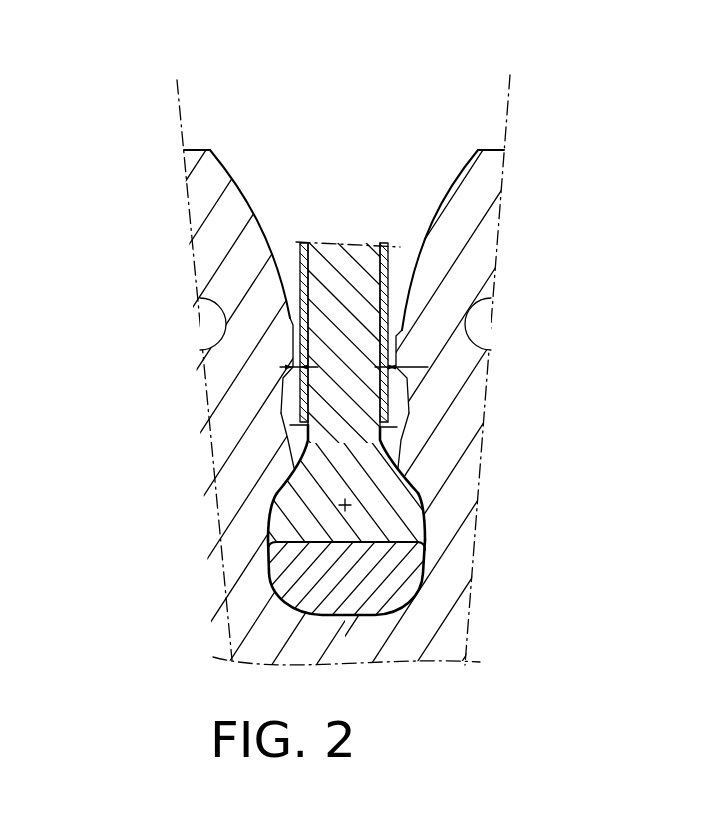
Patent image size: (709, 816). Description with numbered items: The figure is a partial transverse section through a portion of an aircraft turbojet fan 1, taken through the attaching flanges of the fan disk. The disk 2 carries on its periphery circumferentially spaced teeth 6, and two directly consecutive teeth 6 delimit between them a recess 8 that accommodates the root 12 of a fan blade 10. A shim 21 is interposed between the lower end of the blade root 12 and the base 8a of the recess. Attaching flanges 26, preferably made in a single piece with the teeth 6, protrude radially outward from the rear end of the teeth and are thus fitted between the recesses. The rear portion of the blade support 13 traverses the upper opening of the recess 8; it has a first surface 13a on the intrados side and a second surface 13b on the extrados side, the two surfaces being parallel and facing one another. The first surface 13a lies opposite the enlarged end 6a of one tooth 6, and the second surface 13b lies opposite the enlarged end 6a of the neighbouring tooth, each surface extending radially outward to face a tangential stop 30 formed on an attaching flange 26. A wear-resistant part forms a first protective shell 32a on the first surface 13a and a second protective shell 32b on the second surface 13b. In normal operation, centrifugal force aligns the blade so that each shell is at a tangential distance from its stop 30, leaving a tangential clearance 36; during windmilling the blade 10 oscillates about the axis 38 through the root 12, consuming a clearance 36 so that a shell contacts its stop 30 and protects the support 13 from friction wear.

The aircraft turbojet fan 1 is at (603, 140).
The disk 2 is at (423, 649).
The teeth 6 is at (237, 523).
The enlarged end 6a is at (288, 458).
The recess 8 is at (424, 527).
The base of the recess 8a is at (322, 612).
The fan blade 10 is at (342, 230).
The root 12 is at (277, 525).
The support 13 is at (356, 357).
The first surface 13a is at (292, 424).
The second surface 13b is at (400, 430).
The shim 21 is at (343, 587).
The attaching flanges 26 is at (198, 175).
The tangential stop 30 is at (291, 320).
The first protective shell 32a is at (300, 242).
The second protective shell 32b is at (386, 242).
The tangential clearance 36 is at (280, 367).
The axis 38 is at (276, 540).